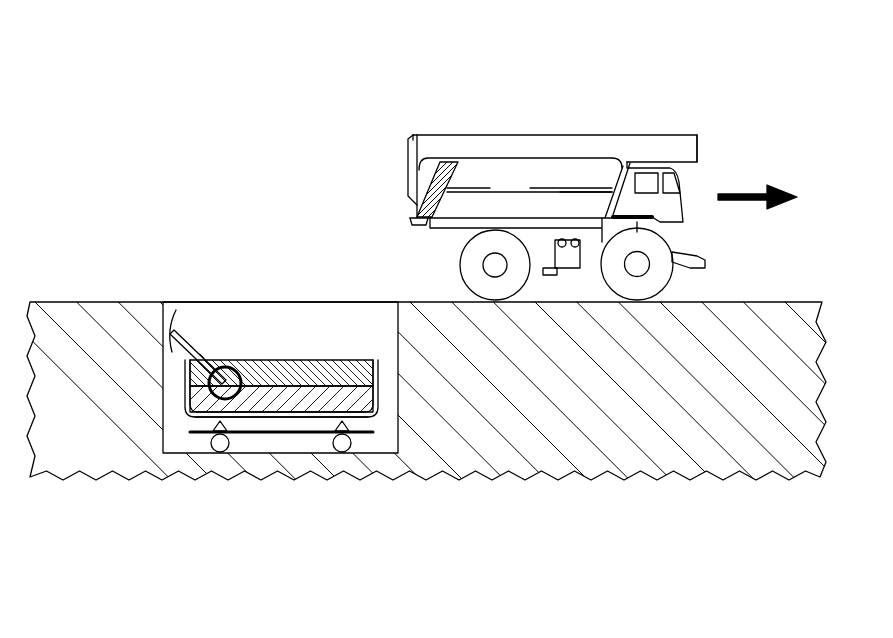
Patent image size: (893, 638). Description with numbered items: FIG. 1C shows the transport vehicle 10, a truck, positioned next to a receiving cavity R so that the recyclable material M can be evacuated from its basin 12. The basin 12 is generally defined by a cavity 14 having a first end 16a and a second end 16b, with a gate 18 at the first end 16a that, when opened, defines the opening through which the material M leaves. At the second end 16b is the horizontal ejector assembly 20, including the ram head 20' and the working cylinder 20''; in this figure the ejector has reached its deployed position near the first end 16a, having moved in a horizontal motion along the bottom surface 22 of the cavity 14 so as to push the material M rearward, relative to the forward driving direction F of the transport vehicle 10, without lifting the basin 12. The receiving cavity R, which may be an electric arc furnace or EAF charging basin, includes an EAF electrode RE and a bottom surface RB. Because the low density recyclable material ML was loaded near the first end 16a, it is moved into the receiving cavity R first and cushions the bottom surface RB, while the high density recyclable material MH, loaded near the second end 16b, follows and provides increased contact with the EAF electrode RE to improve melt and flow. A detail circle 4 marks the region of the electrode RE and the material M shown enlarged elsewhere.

The transport vehicle 10 is at (728, 60).
The basin 12 is at (482, 118).
The cavity 14 is at (546, 135).
The first end 16a is at (410, 113).
The second end 16b is at (636, 105).
The gate 18 is at (408, 152).
The horizontal ejector assembly 20 is at (529, 164).
The ram head 20' is at (438, 140).
The working cylinder 20'' is at (578, 114).
The bottom surface 22 is at (493, 212).
The detail circle 4 is at (232, 398).
The forward driving direction F is at (757, 206).
The recyclable material M is at (377, 343).
The high density recyclable material MH is at (275, 366).
The low density recyclable material ML is at (347, 400).
The receiving cavity R is at (185, 405).
The EAF electrode RE is at (174, 352).
The bottom surface RB is at (198, 410).